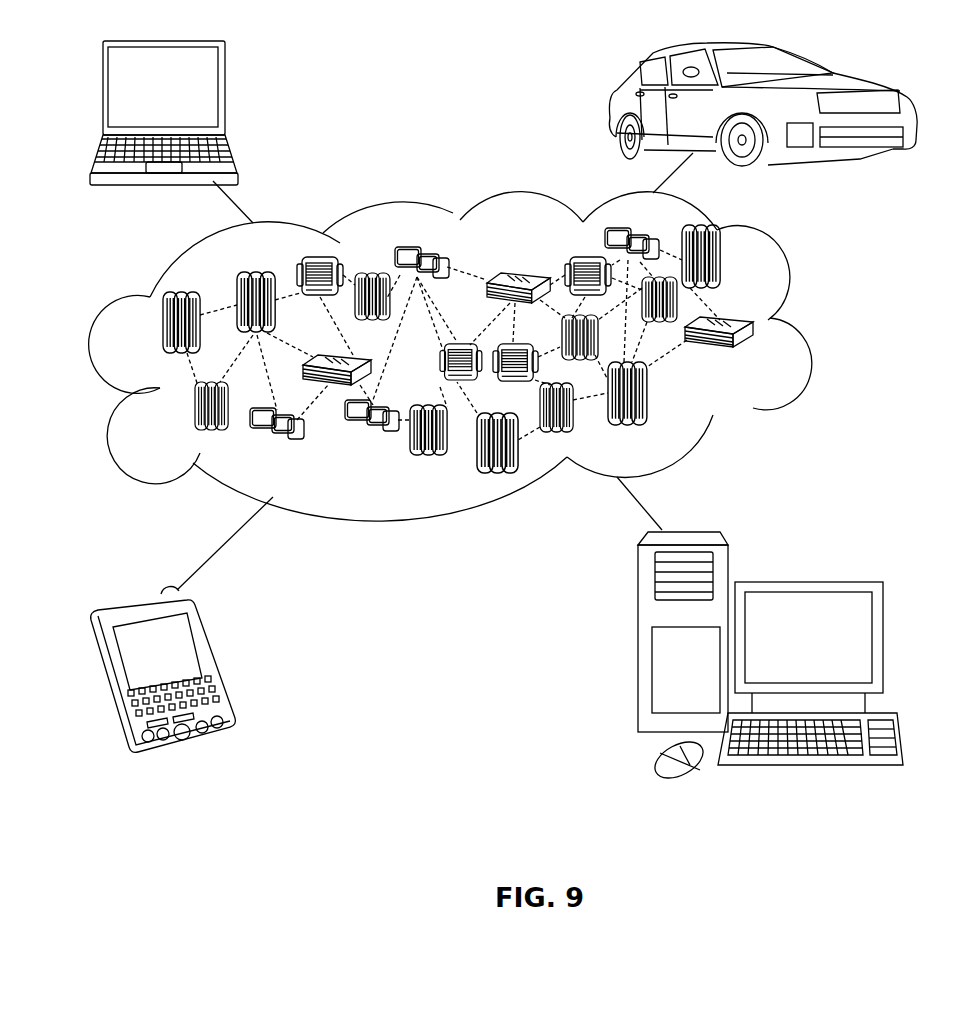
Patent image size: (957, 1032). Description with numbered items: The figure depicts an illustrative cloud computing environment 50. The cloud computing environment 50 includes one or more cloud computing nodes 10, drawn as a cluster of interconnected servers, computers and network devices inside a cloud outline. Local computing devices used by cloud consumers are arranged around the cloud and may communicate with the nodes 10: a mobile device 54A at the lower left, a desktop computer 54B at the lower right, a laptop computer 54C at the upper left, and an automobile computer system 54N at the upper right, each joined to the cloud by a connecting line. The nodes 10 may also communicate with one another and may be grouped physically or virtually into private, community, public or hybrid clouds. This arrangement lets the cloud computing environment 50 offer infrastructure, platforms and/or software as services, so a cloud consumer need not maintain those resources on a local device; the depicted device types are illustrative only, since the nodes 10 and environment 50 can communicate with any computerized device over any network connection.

The cloud computing node 10 is at (753, 357).
The cloud computing environment 50 is at (807, 332).
The mobile device 54A is at (217, 662).
The desktop computer 54B is at (805, 580).
The laptop computer 54C is at (225, 95).
The automobile computer system 54N is at (612, 112).